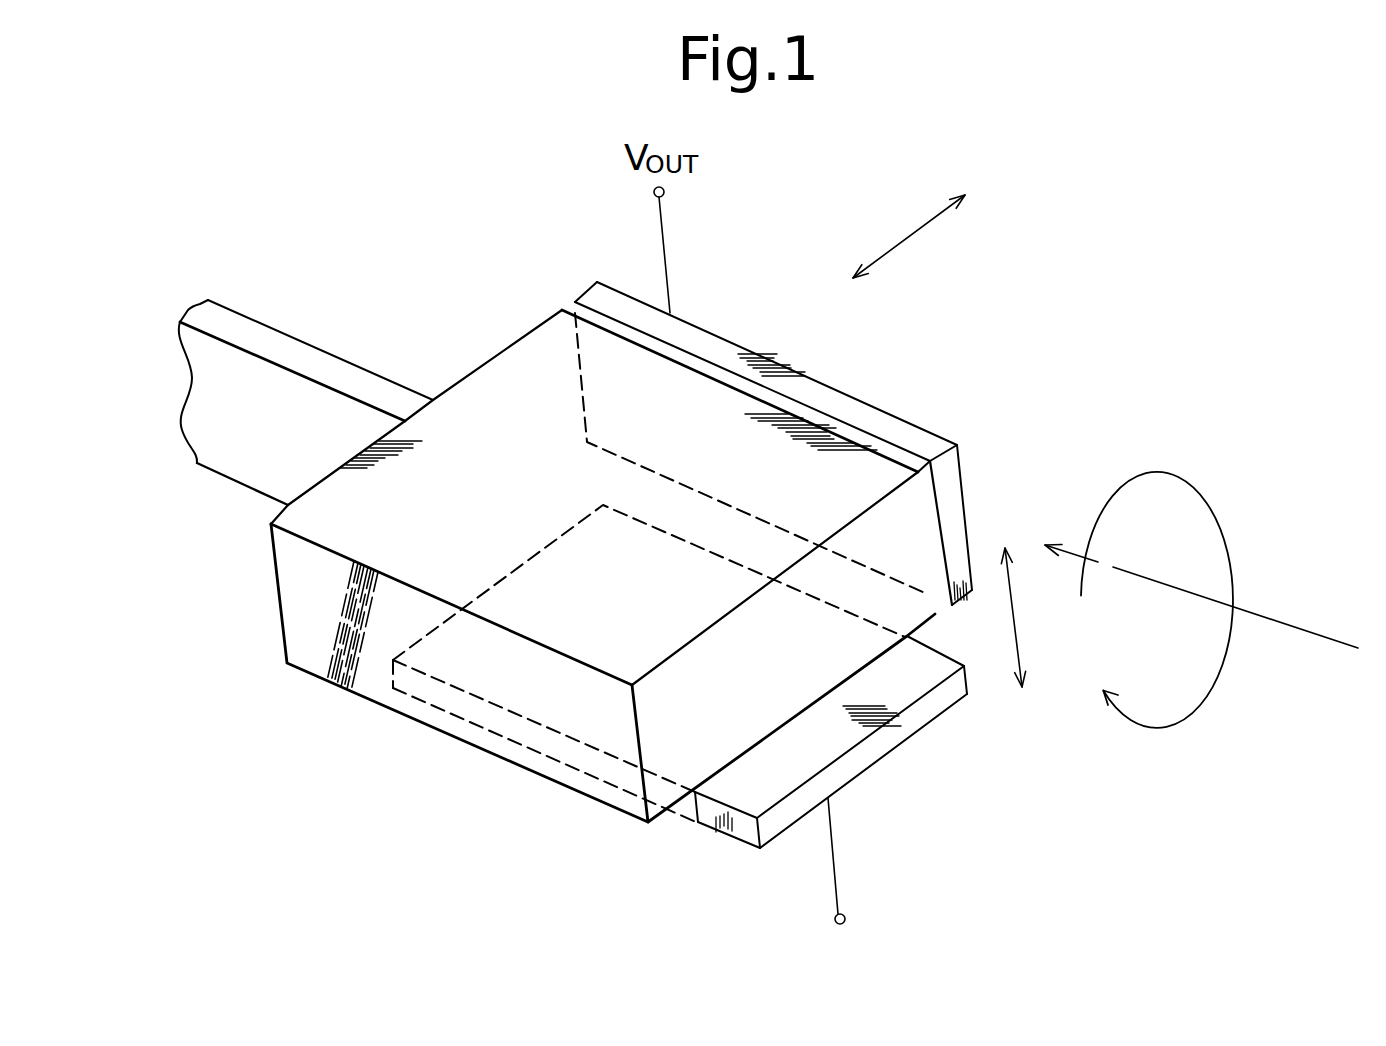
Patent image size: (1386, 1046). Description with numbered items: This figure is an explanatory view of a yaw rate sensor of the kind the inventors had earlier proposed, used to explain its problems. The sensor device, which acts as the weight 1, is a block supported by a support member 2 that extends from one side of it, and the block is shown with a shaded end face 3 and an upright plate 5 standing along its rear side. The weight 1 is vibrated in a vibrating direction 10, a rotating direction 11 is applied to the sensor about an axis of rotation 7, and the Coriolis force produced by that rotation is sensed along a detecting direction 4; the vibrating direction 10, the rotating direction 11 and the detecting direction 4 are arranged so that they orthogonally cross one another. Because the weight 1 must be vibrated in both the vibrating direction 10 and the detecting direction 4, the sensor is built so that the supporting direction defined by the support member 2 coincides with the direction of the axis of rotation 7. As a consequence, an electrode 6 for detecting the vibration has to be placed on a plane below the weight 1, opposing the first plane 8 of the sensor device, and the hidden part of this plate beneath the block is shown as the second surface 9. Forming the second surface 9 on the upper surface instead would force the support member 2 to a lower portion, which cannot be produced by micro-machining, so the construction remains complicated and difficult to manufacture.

The weight 1 is at (352, 537).
The support member 2 is at (272, 343).
The end face of body 3 is at (325, 682).
The detecting direction 4 is at (910, 237).
The first electrode plate 5 is at (862, 398).
The electrode 6 is at (883, 760).
The axis of rotation 7 is at (1300, 633).
The first plane 8 is at (533, 363).
The second surface 9 is at (678, 760).
The vibrating direction 10 is at (1013, 643).
The rotating direction 11 is at (1229, 562).